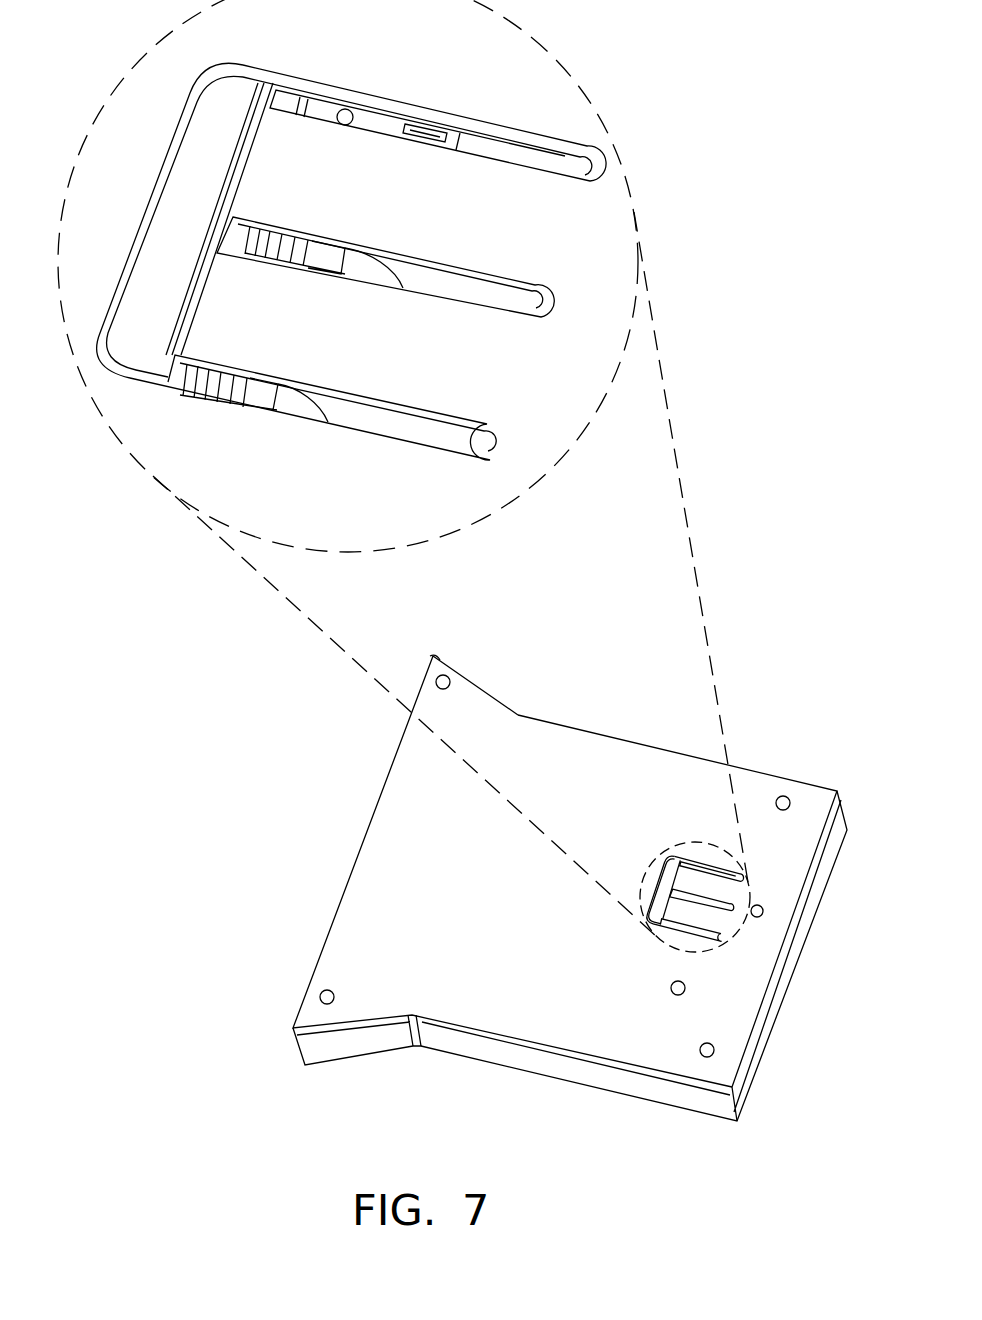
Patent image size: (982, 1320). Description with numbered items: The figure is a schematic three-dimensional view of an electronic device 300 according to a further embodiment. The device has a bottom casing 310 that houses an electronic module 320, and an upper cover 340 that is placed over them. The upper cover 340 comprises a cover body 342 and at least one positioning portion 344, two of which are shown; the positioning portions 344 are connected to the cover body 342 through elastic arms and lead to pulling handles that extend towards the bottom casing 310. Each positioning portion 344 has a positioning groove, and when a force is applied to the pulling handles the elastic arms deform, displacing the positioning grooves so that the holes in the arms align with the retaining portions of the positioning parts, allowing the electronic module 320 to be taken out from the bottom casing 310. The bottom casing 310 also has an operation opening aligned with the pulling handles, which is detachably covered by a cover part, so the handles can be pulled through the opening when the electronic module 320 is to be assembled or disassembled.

The electronic device 300 is at (834, 1164).
The bottom casing 310 is at (637, 1092).
The electronic module 320 is at (188, 187).
The upper cover 340 is at (767, 765).
The cover body 342 is at (808, 795).
The positioning portion 344 is at (503, 233).